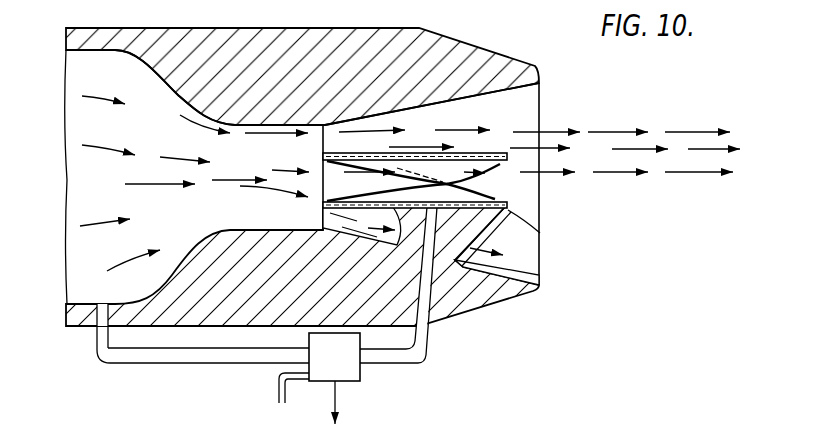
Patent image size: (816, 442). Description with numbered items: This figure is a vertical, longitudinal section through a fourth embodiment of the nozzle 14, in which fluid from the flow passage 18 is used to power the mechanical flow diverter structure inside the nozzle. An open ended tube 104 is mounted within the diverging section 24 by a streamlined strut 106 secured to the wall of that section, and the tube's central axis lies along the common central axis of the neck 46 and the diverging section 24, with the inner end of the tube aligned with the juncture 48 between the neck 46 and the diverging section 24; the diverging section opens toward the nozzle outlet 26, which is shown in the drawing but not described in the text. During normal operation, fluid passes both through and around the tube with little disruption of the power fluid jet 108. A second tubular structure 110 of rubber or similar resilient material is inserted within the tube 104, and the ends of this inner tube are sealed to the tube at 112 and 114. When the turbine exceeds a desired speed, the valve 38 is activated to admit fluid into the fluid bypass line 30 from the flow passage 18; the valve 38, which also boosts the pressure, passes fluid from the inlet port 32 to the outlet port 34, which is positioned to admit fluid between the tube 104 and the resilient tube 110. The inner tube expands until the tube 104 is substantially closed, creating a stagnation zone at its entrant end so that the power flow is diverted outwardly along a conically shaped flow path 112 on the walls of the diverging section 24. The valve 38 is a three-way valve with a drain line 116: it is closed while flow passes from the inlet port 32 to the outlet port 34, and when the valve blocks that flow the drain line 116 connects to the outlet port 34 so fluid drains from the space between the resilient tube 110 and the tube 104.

The nozzle 14 is at (205, 44).
The flow passage 18 is at (112, 58).
The neck 46 is at (263, 108).
The juncture 48 is at (314, 130).
The diverging section 24 is at (496, 103).
The outlet 26 is at (543, 90).
The open ended tube 104 is at (360, 153).
The sealed end / conically shaped flow path 112 is at (510, 163).
The second tubular structure 110 is at (500, 165).
The streamlined strut 106 is at (483, 220).
The sealed end 114 is at (316, 222).
The outlet port 34 is at (441, 208).
The inlet port 32 is at (110, 306).
The fluid bypass line 30 is at (222, 367).
The drain line 116 is at (277, 394).
The valve 38 is at (360, 378).
The power fluid jet 108 is at (600, 130).